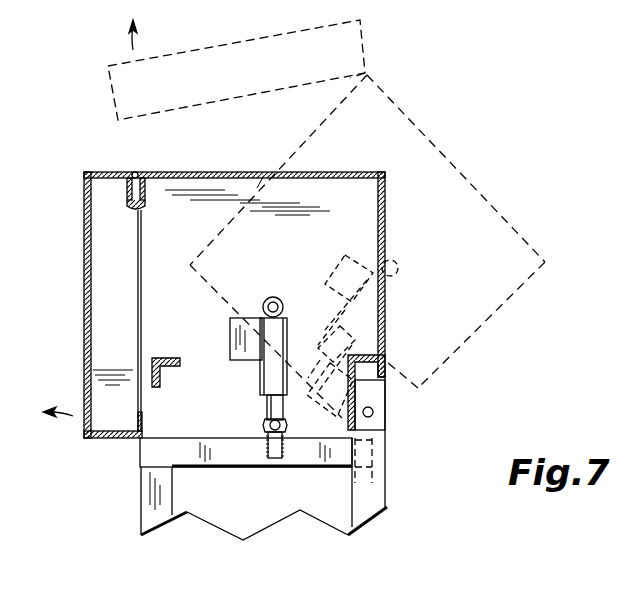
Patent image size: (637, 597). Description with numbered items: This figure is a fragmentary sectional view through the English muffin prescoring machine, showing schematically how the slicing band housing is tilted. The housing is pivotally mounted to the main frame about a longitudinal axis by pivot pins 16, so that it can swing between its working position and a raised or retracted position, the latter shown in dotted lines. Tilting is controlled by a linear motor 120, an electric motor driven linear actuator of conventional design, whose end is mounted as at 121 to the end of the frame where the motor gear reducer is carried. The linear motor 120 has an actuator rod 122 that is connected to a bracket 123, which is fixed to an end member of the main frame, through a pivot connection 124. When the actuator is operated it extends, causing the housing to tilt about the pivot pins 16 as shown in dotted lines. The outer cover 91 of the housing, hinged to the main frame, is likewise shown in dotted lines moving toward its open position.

The outer cover 91 is at (367, 46).
The pivot pins 16 is at (374, 412).
The linear motor 120 is at (262, 373).
The end mounting 121 is at (274, 298).
The actuator rod 122 is at (262, 402).
The bracket 123 is at (283, 452).
The pivot connection 124 is at (288, 427).